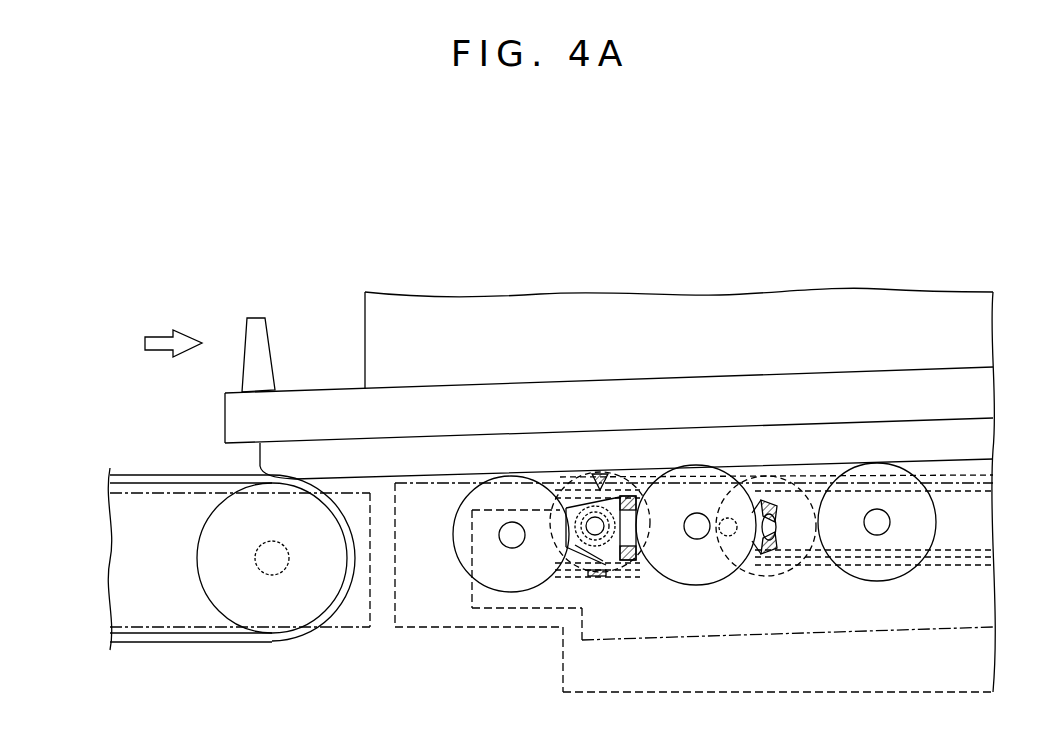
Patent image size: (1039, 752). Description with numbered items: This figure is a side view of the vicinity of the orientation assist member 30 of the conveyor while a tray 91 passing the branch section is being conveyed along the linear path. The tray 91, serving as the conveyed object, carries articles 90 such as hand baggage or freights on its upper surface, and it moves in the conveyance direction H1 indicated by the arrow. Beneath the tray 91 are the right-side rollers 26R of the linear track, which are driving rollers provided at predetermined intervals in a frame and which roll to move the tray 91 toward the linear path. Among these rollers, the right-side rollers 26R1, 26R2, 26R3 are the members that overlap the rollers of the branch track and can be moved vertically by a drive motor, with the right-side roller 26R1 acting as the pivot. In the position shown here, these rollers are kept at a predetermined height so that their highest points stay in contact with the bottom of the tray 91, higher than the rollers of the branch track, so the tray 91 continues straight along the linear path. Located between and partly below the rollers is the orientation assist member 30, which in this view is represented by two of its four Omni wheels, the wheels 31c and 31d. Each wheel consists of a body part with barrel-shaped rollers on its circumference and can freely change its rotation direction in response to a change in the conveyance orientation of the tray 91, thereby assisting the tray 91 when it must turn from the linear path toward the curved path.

The travel direction H1 is at (143, 340).
The articles 90 is at (388, 330).
The tray 91 is at (250, 358).
The right-side rollers 26R is at (704, 570).
The right-side roller 26R1 is at (513, 578).
The right-side roller 26R2 is at (693, 577).
The right-side roller 26R3 is at (877, 578).
The orientation assist member 30 is at (706, 554).
The wheel 31c is at (789, 552).
The wheel 31d is at (619, 554).